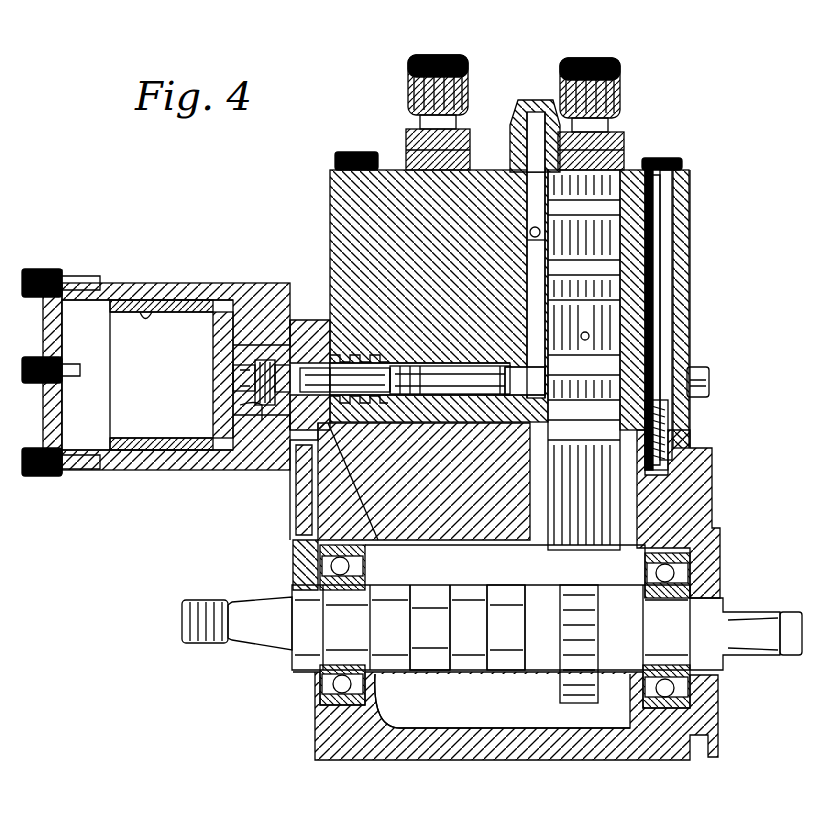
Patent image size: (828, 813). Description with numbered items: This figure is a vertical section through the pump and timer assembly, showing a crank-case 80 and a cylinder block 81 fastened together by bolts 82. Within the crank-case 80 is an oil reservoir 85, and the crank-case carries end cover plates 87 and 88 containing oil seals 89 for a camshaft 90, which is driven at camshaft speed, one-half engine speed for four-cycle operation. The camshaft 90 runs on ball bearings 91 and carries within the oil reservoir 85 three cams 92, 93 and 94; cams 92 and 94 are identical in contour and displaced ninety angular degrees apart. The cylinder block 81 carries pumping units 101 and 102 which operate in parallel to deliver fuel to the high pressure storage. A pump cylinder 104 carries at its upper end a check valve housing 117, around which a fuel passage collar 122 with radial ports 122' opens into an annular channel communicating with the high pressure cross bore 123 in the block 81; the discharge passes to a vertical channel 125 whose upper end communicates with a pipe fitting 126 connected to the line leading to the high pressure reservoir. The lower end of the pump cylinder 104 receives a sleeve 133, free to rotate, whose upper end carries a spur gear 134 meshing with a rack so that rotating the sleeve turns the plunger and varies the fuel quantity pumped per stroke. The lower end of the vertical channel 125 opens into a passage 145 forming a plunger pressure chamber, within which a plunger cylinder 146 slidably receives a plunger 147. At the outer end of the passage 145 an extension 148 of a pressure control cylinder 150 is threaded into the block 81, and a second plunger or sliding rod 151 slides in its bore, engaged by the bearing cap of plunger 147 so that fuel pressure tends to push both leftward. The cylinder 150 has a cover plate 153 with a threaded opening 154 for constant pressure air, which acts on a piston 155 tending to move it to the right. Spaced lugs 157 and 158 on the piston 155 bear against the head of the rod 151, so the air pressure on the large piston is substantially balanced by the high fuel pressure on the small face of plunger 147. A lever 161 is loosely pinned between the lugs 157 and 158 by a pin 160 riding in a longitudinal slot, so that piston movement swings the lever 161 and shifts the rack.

The crank-case 80 is at (345, 500).
The cylinder block 81 is at (338, 195).
The bolts 82 is at (660, 265).
The oil reservoir 85 is at (455, 713).
The end cover plate 87 is at (300, 548).
The end cover plate 88 is at (715, 462).
The oil seals 89 is at (295, 585).
The camshaft 90 is at (270, 636).
The ball bearings 91 is at (345, 695).
The cam 92 is at (425, 672).
The cam 93 is at (505, 672).
The cam 94 is at (578, 703).
The pumping unit 101 is at (600, 58).
The pumping unit 102 is at (440, 55).
The pump cylinder 104 is at (672, 300).
The check valve housing 117 is at (672, 240).
The fuel passage collar 122 is at (710, 315).
The radial ports 122' is at (705, 312).
The high pressure cross bore 123 is at (530, 232).
The vertical channel 125 is at (537, 270).
The pipe fitting 126 is at (516, 118).
The sleeve 133 is at (688, 410).
The spur gear 134 is at (700, 372).
The passage 145 is at (515, 370).
The plunger cylinder 146 is at (458, 366).
The plunger 147 is at (420, 365).
The extension 148 is at (330, 355).
The pressure control cylinder 150 is at (160, 457).
The second plunger or sliding rod 151 is at (310, 345).
The cover plate 153 is at (55, 414).
The threaded opening 154 is at (50, 380).
The piston 155 is at (145, 318).
The lug 157 is at (268, 400).
The lug 158 is at (265, 360).
The pin 160 is at (262, 405).
The lever 161 is at (248, 378).